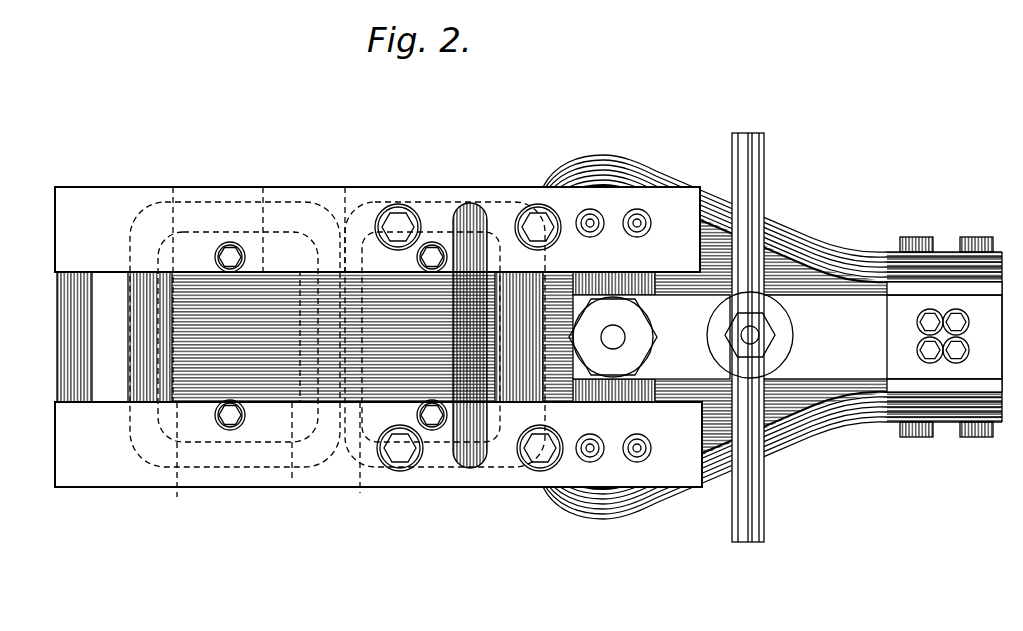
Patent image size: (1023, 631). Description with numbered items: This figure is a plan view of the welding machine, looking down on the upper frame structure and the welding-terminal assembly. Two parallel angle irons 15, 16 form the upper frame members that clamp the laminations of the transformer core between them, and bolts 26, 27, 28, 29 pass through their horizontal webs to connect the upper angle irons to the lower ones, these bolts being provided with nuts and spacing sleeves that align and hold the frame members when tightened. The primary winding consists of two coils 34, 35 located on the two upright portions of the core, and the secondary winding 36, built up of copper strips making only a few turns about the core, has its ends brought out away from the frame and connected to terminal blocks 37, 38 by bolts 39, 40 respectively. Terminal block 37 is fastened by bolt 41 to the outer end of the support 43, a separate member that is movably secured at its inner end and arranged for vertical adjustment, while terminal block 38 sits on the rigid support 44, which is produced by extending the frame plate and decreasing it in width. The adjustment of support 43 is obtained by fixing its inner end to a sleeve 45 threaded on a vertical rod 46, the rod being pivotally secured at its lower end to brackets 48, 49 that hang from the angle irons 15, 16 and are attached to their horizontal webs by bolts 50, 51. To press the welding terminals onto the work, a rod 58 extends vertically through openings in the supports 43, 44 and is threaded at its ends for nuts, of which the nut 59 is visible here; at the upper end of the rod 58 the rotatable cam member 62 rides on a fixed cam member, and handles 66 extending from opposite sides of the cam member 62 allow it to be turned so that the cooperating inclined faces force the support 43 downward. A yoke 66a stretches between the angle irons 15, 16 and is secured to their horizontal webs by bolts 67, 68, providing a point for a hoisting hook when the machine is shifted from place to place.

The angle iron 15 is at (90, 193).
The angle iron 16 is at (137, 473).
The bolt 26 is at (228, 247).
The bolt 27 is at (228, 427).
The bolt 28 is at (418, 257).
The bolt 29 is at (418, 413).
The primary winding coil 34 is at (263, 188).
The primary winding coil 35 is at (345, 188).
The secondary winding 36 is at (578, 162).
The terminal block 37 is at (903, 378).
The terminal block 38 is at (908, 285).
The bolt 39 is at (963, 437).
The bolt 40 is at (920, 237).
The bolt 41 is at (925, 324).
The support 43 is at (980, 303).
The support 44 is at (790, 268).
The sleeve 45 is at (643, 348).
The vertical rod 46 is at (622, 333).
The bracket 48 is at (660, 279).
The bracket 49 is at (660, 387).
The bolt 50 is at (632, 228).
The bolt 51 is at (633, 438).
The rod 58 is at (752, 335).
The nut 59 is at (763, 343).
The cam member 62 is at (767, 313).
The handle 66 is at (757, 500).
The yoke 66a is at (470, 210).
The bolt 67 is at (402, 220).
The bolt 68 is at (527, 453).